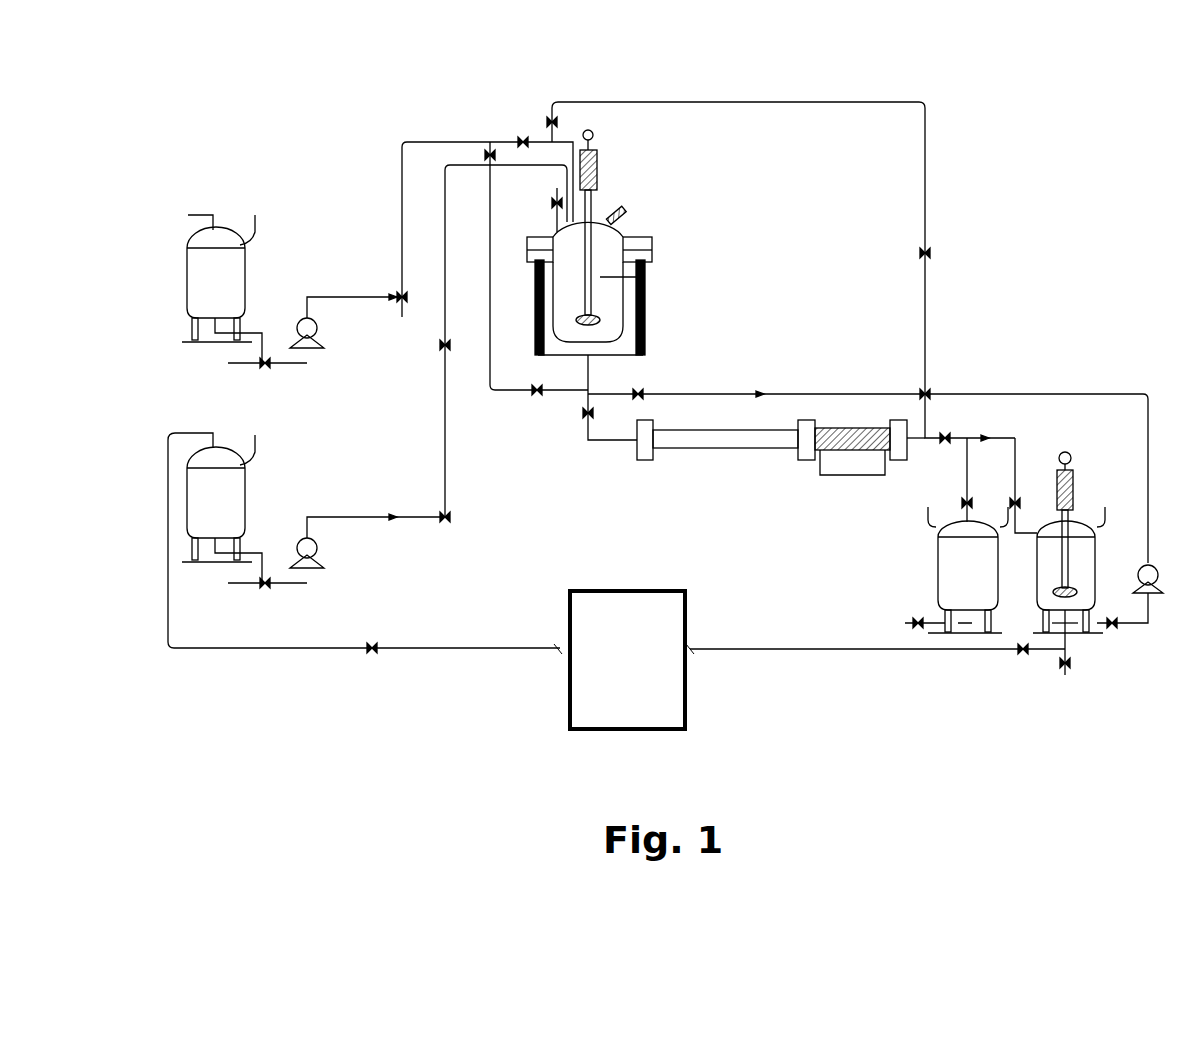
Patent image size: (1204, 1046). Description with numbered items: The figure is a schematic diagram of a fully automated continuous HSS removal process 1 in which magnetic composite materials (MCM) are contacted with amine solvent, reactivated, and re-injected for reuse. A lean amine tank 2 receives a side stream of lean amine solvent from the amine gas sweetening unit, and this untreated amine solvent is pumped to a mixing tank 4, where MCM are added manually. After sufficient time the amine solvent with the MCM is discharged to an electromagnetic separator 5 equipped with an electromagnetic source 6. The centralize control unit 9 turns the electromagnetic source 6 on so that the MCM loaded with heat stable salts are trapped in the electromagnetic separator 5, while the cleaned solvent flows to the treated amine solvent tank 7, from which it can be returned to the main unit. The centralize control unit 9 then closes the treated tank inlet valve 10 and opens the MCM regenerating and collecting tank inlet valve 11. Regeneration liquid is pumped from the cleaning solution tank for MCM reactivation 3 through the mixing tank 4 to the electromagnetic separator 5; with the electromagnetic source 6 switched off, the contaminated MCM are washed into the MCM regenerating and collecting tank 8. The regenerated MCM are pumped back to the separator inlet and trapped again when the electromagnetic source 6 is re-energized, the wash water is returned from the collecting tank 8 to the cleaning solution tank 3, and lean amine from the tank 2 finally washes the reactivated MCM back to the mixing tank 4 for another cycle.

The continuous HSS removal process 1 is at (262, 107).
The lean amine tank 2 is at (232, 213).
The cleaning solution tank for MCM reactivation 3 is at (226, 441).
The mixing tank 4 is at (609, 209).
The electromagnetic separator 5 is at (735, 455).
The electromagnetic source 6 is at (842, 457).
The treated amine solvent tank 7 is at (949, 517).
The MCM regenerating and collecting tank 8 is at (1084, 515).
The centralize control unit 9 is at (614, 577).
The treated tank inlet valve 10 is at (973, 496).
The MCM regenerating and collecting tank inlet valve 11 is at (1017, 492).